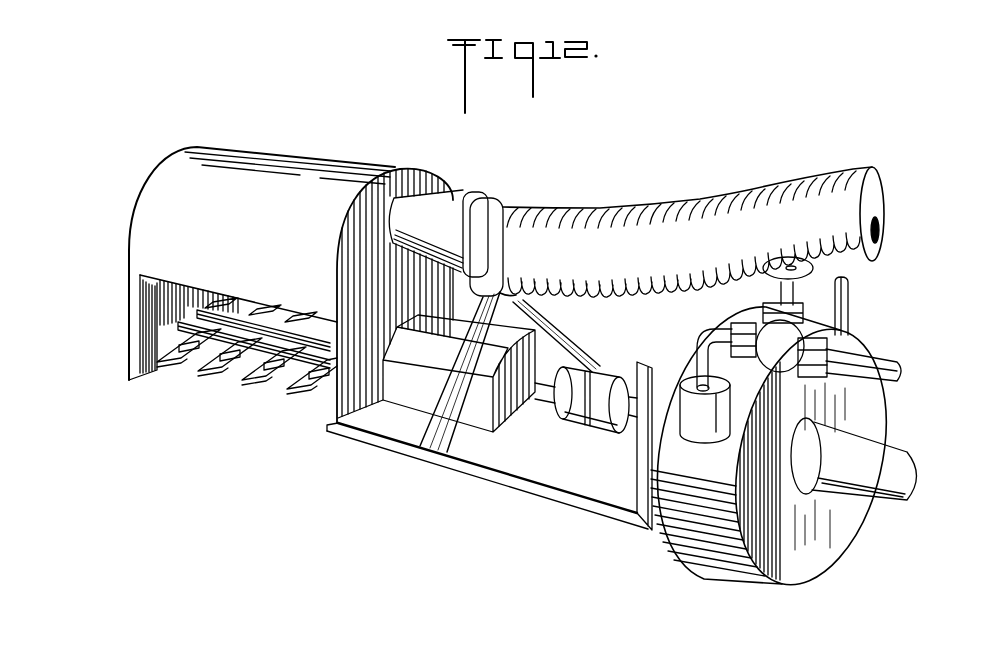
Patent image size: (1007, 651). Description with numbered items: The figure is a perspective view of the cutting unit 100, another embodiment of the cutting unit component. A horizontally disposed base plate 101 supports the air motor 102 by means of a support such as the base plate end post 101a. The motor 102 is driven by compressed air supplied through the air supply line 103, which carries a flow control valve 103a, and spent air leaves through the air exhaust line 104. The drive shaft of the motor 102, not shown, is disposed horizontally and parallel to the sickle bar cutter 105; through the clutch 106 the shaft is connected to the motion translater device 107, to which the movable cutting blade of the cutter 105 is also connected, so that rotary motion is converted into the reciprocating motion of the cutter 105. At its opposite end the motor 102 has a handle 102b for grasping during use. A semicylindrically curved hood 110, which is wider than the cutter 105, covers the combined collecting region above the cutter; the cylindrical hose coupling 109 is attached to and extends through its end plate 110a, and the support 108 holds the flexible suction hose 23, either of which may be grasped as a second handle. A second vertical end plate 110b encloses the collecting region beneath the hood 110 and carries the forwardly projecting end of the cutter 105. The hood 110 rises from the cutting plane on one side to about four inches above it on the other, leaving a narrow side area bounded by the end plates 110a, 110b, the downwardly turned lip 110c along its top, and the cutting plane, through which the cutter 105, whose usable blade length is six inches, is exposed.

The flexible suction hose 23 is at (617, 205).
The cutting unit 100 is at (170, 407).
The base plate 101 is at (513, 458).
The base plate end post 101a is at (638, 473).
The air motor 102 is at (827, 547).
The handle 102b is at (847, 450).
The air supply line 103 is at (883, 363).
The flow control valve 103a is at (787, 290).
The air exhaust line 104 is at (853, 311).
The sickle bar cutter 105 is at (233, 370).
The clutch 106 is at (573, 420).
The motion translater device 107 is at (477, 420).
The support for the flexible suction hose 108 is at (500, 200).
The cylindrical hose coupling 109 is at (457, 207).
The hood 110 is at (305, 160).
The end plate 110a is at (408, 178).
The second vertical end plate 110b is at (148, 340).
The downwardly turned lip 110c is at (160, 283).